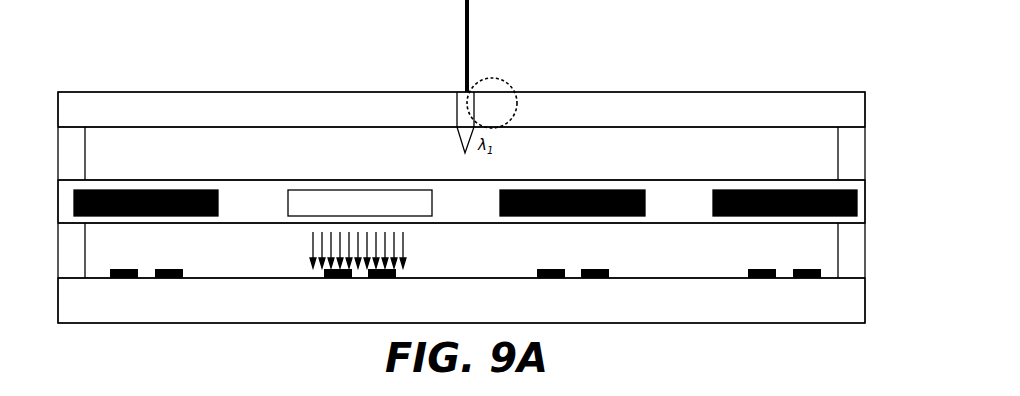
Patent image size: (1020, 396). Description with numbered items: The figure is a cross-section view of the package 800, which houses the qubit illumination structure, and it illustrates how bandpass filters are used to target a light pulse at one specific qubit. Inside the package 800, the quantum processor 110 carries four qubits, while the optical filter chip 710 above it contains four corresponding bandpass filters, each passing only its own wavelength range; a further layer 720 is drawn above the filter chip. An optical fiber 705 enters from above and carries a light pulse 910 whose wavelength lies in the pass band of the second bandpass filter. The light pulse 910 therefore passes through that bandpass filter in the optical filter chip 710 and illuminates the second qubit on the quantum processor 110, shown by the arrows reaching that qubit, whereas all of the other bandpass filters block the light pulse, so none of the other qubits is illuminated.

The package 800 is at (865, 160).
The cover layer 720 is at (56, 108).
The optical filter chip 710 is at (57, 203).
The quantum processor 110 is at (55, 307).
The optical fiber 705 is at (465, 62).
The light pulse 910 is at (518, 91).